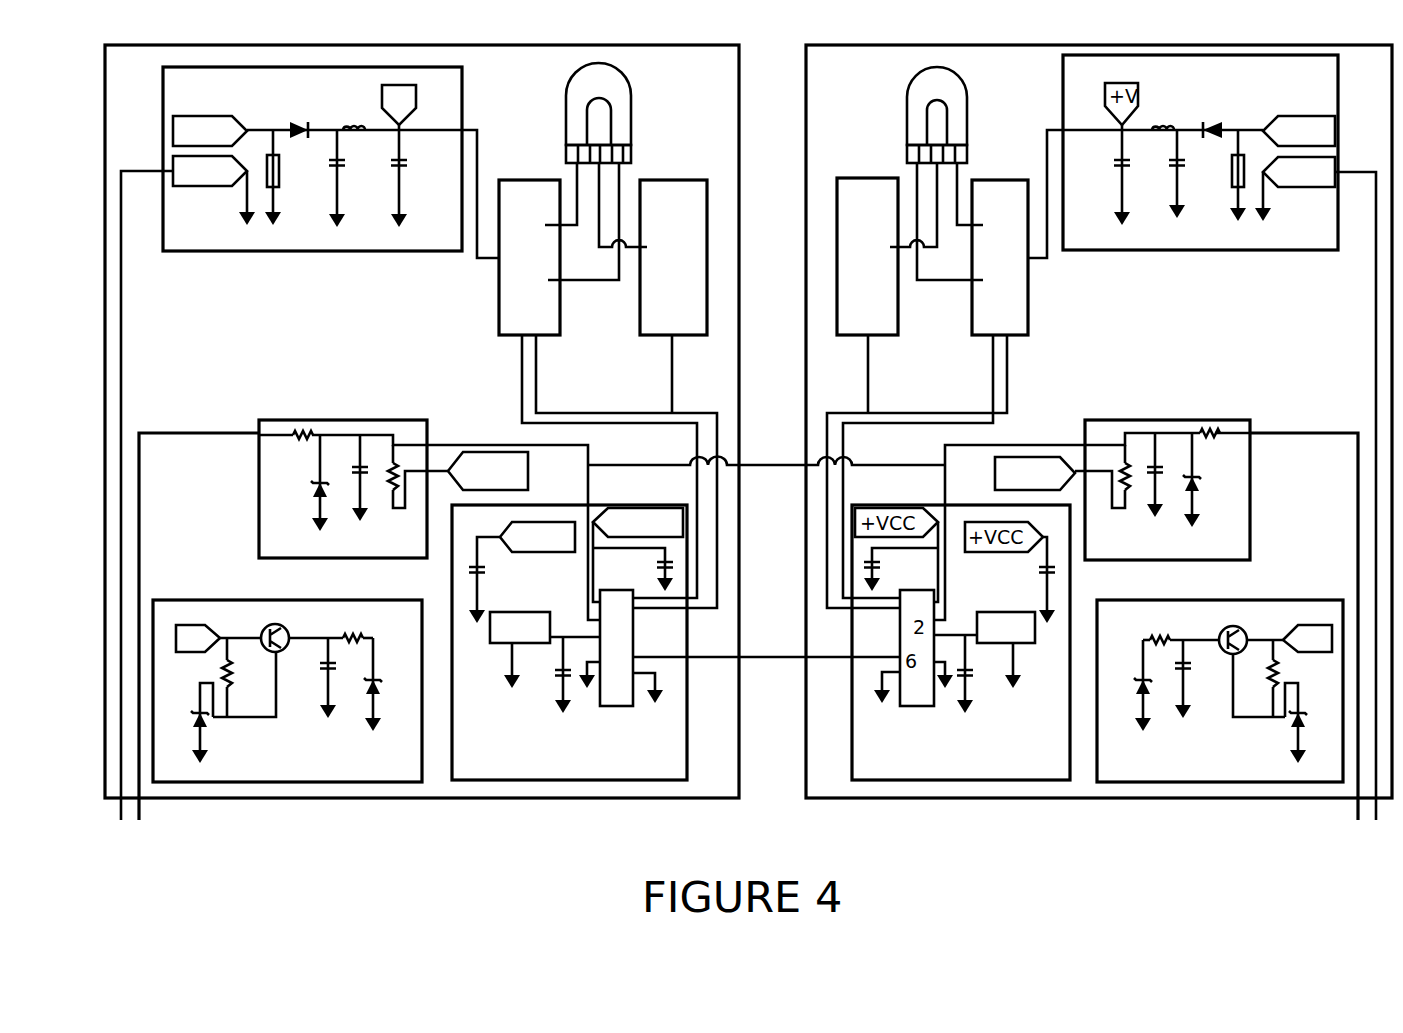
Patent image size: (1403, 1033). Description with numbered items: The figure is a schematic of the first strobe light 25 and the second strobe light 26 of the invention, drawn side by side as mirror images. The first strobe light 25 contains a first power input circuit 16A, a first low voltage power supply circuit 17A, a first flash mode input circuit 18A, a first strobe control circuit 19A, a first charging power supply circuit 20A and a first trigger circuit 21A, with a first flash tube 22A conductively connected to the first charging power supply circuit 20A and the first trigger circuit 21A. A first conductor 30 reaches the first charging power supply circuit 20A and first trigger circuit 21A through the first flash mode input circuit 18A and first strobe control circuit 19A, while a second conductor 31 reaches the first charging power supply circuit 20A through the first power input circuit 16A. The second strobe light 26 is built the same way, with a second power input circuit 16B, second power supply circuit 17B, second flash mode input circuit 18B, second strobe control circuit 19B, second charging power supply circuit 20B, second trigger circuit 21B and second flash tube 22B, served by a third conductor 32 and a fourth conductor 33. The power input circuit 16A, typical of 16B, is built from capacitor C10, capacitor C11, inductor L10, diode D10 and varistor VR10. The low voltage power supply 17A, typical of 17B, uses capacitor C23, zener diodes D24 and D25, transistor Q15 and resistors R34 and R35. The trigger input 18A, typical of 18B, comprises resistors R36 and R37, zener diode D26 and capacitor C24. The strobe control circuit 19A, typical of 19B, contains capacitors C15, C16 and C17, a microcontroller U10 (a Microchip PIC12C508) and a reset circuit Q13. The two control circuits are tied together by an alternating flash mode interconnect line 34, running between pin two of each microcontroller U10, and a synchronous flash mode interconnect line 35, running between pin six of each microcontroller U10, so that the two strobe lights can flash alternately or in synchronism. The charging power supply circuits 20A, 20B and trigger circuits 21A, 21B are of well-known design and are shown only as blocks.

The first strobe light 25 is at (422, 799).
The second strobe light 26 is at (1097, 799).
The first power input circuit 16A is at (248, 253).
The second power input circuit 16B is at (1262, 252).
The first low voltage power supply circuit 17A is at (212, 600).
The second power supply circuit 17B is at (1288, 600).
The first flash mode input circuit 18A is at (274, 498).
The second flash mode input circuit 18B is at (1230, 498).
The first strobe control circuit 19A is at (460, 582).
The second strobe control circuit 19B is at (1070, 582).
The first charging power supply circuit 20A is at (518, 180).
The second charging power supply circuit 20B is at (1005, 180).
The first trigger circuit 21A is at (672, 180).
The second trigger circuit 21B is at (866, 178).
The first flash tube 22A is at (567, 118).
The second flash tube 22B is at (963, 118).
The first conductor 30 is at (186, 433).
The second conductor 31 is at (121, 348).
The third conductor 32 is at (1316, 433).
The fourth conductor 33 is at (1376, 348).
The alternating flash mode interconnect line 34 is at (770, 464).
The synchronous flash mode interconnect line 35 is at (760, 656).
The diode D10 is at (290, 126).
The inductor L10 is at (350, 126).
The varistor VR10 is at (262, 170).
The capacitor C10 is at (342, 168).
The capacitor C11 is at (404, 168).
The resistor R37 is at (300, 444).
The diode D26 is at (314, 476).
The capacitor C24 is at (354, 472).
The resistor R36 is at (388, 470).
The capacitor C17 is at (484, 570).
The capacitor C15 is at (658, 566).
The reset circuit Q13 is at (505, 646).
The capacitor C16 is at (556, 674).
The microcontroller U10 is at (610, 708).
The transistor Q15 is at (268, 626).
The resistor R35 is at (352, 626).
The resistor R34 is at (220, 672).
The capacitor C23 is at (320, 666).
The diode D24 is at (366, 696).
The diode D25 is at (206, 716).